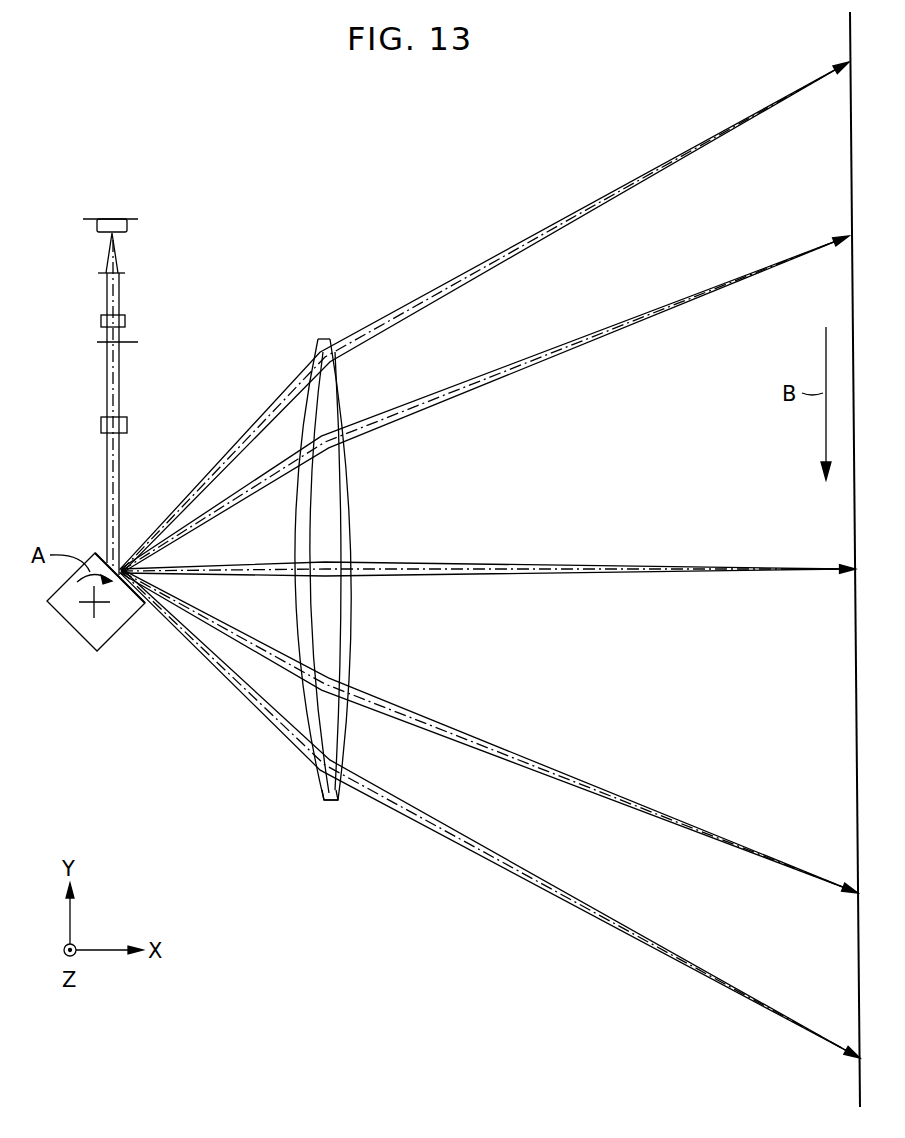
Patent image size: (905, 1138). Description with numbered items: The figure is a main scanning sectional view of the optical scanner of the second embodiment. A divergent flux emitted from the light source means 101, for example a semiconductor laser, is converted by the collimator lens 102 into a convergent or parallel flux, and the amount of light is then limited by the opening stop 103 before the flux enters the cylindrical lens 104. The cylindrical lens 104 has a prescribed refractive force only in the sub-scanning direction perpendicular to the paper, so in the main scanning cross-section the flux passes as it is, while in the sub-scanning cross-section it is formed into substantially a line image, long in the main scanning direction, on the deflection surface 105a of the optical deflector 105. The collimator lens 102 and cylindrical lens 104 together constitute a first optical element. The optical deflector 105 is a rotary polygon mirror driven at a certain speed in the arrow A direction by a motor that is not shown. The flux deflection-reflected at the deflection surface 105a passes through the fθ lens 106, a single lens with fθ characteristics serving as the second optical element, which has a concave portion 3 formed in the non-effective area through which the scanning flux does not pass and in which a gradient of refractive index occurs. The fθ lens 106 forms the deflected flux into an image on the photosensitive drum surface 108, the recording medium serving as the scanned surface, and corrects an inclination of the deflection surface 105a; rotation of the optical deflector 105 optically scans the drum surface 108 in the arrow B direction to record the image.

The light source means 101 is at (85, 218).
The collimator lens 102 is at (100, 318).
The opening stop 103 is at (100, 342).
The cylindrical lens 104 is at (100, 425).
The optical deflector 105 is at (70, 627).
The deflection surface 105a is at (105, 550).
The concave portion 3 is at (338, 660).
The fθ lens 106 is at (323, 778).
The photosensitive drum surface 108 is at (855, 708).